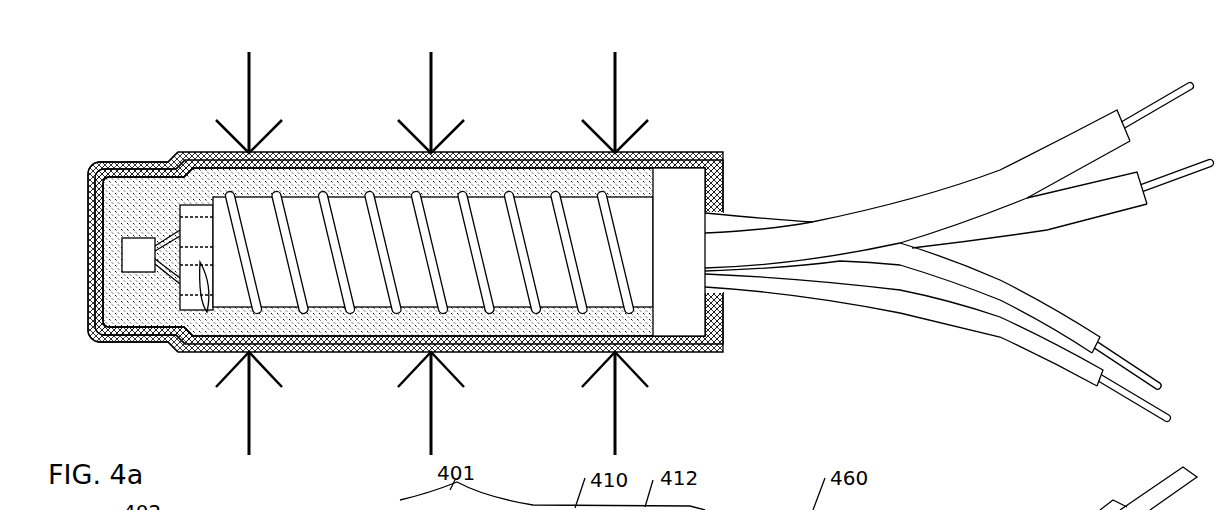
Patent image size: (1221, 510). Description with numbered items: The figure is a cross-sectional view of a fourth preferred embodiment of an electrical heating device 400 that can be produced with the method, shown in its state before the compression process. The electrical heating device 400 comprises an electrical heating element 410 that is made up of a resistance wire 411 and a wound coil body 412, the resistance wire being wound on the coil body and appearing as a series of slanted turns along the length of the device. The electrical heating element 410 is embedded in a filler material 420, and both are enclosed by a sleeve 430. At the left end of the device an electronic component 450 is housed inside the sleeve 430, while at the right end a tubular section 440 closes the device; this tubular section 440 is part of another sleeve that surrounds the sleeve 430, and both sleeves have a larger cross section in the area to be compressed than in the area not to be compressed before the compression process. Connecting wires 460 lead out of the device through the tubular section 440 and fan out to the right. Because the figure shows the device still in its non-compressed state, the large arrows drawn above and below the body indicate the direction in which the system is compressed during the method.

The electrical heating device 400 is at (668, 150).
The electrical heating element 410 is at (453, 193).
The resistance wire 411 is at (370, 193).
The wound coil body 412 is at (537, 240).
The filler material 420 is at (293, 155).
The sleeve 430 is at (143, 350).
The tubular section 440 is at (668, 353).
The electronic component 450 is at (152, 158).
The connecting wires 460 is at (773, 248).